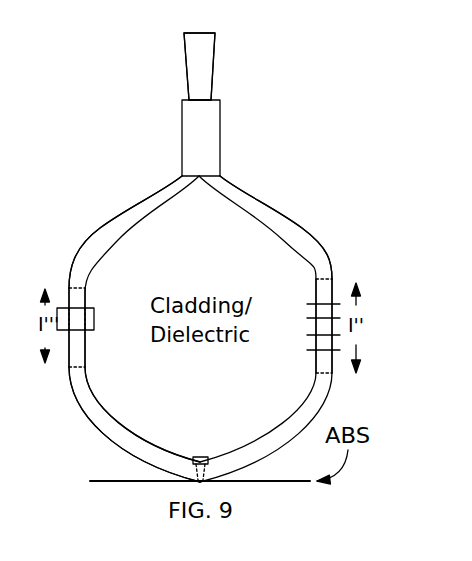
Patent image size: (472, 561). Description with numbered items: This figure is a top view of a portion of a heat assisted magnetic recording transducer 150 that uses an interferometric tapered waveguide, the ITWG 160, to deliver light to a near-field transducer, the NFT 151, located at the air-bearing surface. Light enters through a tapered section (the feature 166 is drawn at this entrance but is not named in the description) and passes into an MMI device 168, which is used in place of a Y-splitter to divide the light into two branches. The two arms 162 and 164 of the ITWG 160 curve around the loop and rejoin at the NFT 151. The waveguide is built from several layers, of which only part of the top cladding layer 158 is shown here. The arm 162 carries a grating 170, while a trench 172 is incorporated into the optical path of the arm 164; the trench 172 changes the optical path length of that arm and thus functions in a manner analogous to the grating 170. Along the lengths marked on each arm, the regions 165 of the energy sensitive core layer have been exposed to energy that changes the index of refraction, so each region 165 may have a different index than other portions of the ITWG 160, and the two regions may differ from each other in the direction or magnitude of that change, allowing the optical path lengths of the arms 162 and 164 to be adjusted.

The HAMR transducer 150 is at (225, 17).
The NFT 151 is at (199, 457).
The top cladding layer 158 is at (153, 422).
The ITWG 160 is at (247, 157).
The arm 162 is at (278, 208).
The arm 164 is at (136, 203).
The region 165 is at (297, 312).
The tapered feed 166 is at (167, 94).
The MMI device 168 is at (220, 142).
The grating 170 is at (293, 327).
The trench 172 is at (94, 318).